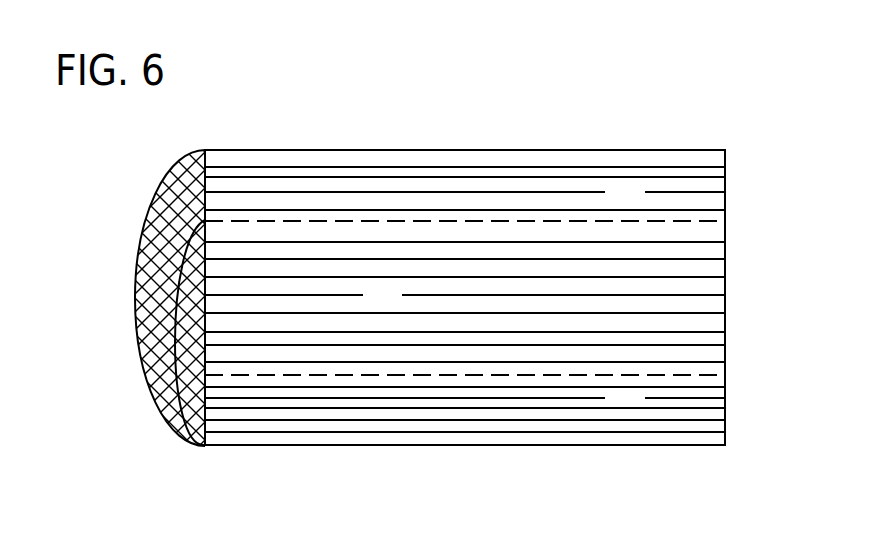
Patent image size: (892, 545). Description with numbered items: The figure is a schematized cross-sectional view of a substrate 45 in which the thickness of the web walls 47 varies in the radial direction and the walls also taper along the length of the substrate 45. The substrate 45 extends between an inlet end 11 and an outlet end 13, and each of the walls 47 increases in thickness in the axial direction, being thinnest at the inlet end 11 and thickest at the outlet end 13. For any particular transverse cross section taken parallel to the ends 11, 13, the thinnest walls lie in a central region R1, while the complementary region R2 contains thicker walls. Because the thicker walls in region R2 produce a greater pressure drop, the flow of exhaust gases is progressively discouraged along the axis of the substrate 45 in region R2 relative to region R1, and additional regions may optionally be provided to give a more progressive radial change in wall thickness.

The inlet end 11 is at (172, 410).
The outlet end 13 is at (738, 280).
The substrate 45 is at (124, 241).
The web walls 47 is at (703, 362).
The region R1 is at (465, 297).
The region R2 is at (465, 296).